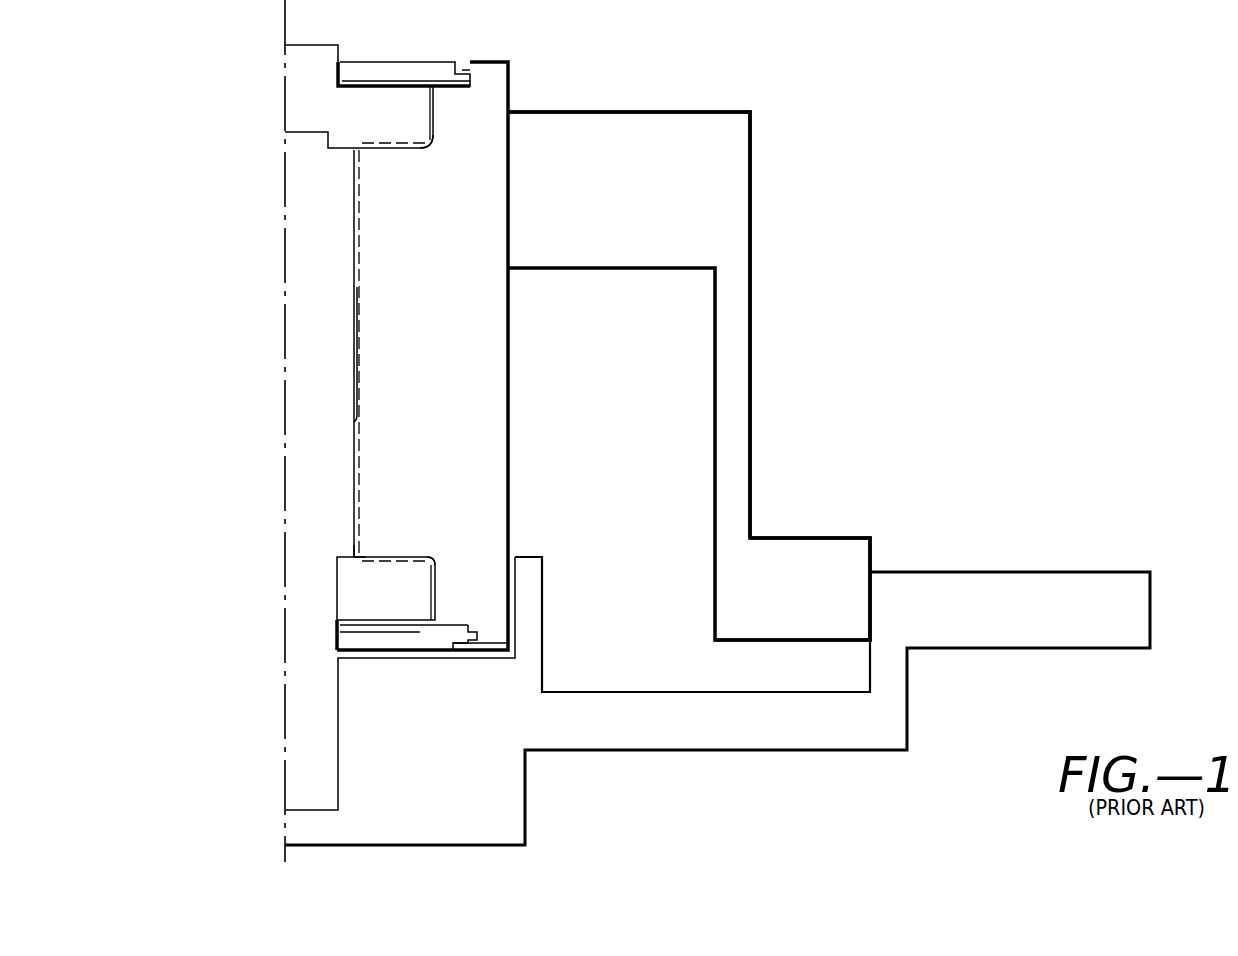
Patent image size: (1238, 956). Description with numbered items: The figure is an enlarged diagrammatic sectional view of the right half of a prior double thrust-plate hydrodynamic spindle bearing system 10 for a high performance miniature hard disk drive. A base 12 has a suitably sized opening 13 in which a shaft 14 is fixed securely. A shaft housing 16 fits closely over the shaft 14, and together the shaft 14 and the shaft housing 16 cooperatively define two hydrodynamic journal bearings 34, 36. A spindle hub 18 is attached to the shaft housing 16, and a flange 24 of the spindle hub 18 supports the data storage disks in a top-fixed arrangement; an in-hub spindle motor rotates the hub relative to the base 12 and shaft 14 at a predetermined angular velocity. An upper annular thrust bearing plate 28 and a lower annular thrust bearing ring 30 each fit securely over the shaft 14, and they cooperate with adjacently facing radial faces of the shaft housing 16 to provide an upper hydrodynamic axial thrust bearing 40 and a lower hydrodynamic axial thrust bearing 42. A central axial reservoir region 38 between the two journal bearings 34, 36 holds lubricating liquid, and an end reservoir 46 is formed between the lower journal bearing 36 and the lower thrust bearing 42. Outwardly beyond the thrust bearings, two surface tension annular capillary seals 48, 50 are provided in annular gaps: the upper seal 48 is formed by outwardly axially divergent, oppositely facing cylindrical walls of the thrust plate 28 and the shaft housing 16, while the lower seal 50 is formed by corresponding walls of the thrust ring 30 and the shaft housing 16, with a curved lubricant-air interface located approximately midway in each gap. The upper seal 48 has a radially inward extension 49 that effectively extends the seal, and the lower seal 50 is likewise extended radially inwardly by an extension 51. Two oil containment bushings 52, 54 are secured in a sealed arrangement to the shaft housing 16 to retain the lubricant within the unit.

The double thrust-plate hydrodynamic spindle bearing system 10 is at (218, 672).
The base 12 is at (318, 825).
The opening 13 is at (338, 768).
The shaft 14 is at (300, 416).
The shaft housing 16 is at (446, 357).
The spindle hub 18 is at (606, 130).
The flange 24 is at (818, 548).
The upper annular thrust bearing plate 28 is at (298, 98).
The lower annular thrust bearing ring 30 is at (333, 590).
The hydrodynamic journal bearing 34 is at (342, 252).
The hydrodynamic journal bearing 36 is at (342, 490).
The central axial reservoir region 38 is at (355, 357).
The upper hydrodynamic axial thrust bearing 40 is at (415, 150).
The lower hydrodynamic axial thrust bearing 42 is at (400, 557).
The end reservoir 46 is at (355, 557).
The upper surface tension annular capillary seal 48 is at (436, 100).
The radially inward extension 49 is at (373, 84).
The lower surface tension annular capillary seal 50 is at (432, 611).
The extension 51 is at (391, 623).
The oil containment bushing 52 is at (415, 62).
The oil containment bushing 54 is at (408, 635).